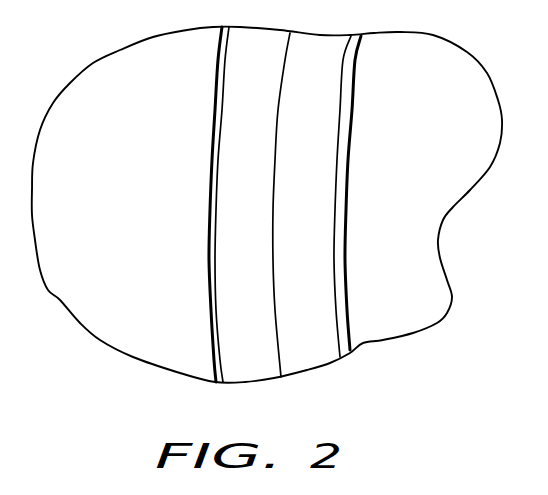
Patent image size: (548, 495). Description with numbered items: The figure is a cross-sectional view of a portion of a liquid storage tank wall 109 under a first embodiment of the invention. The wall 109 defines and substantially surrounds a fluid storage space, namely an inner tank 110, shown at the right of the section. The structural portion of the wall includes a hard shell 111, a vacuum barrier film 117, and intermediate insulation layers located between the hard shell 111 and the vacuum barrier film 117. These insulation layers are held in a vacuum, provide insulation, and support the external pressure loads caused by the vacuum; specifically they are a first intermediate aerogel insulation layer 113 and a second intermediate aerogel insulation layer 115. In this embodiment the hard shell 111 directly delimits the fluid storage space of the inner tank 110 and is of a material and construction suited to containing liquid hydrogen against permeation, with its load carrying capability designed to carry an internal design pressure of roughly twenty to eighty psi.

The wall 109 is at (128, 152).
The inner tank 110 is at (409, 245).
The hard shell 111 is at (348, 91).
The first intermediate aerogel insulation layer 113 is at (312, 185).
The second intermediate aerogel insulation layer 115 is at (235, 221).
The vacuum barrier film 117 is at (208, 290).